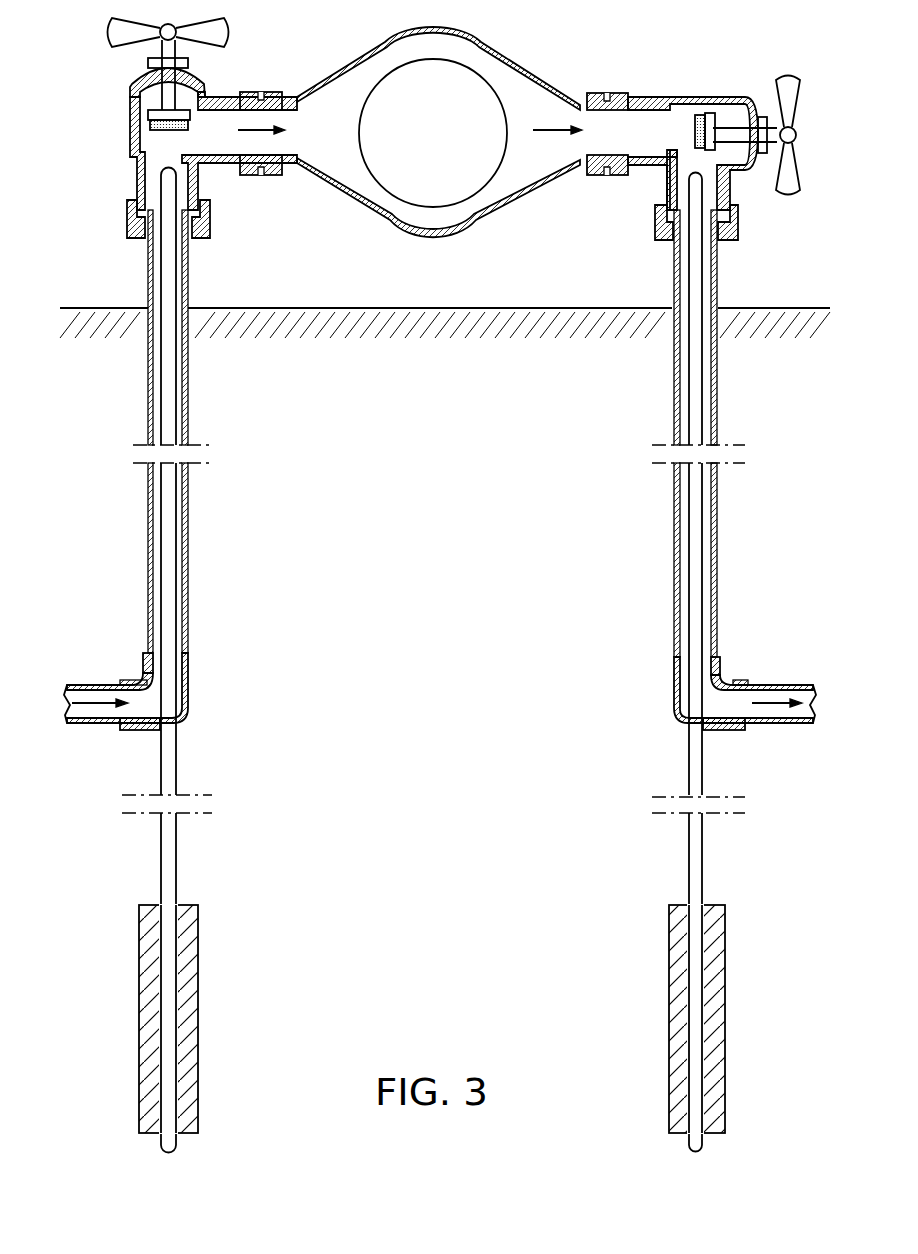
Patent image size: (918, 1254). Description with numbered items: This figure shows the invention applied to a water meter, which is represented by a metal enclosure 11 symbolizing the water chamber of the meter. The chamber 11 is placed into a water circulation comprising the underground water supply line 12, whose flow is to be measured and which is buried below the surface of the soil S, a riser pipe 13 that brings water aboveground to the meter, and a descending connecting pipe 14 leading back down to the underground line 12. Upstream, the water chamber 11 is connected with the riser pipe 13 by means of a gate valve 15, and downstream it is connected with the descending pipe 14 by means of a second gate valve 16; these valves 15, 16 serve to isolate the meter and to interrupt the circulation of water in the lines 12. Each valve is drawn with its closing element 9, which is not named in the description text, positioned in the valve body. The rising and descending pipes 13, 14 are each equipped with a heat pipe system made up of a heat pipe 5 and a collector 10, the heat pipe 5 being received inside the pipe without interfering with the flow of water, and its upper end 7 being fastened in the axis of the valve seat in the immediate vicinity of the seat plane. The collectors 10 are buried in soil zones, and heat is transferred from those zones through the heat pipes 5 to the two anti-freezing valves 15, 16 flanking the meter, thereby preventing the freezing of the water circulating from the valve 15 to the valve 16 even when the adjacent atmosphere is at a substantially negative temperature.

The heat pipe 5 is at (176, 773).
The upper end of the heat pipe 7 is at (168, 171).
The valve packing 9 is at (148, 123).
The collector 10 is at (190, 999).
The metal enclosure 11 is at (368, 218).
The underground water supply line 12 is at (108, 733).
The riser pipe 13 is at (187, 573).
The connecting pipe 14 is at (680, 525).
The gate valve 15 is at (132, 82).
The second gate valve 16 is at (737, 95).
The surface of the soil S is at (467, 308).